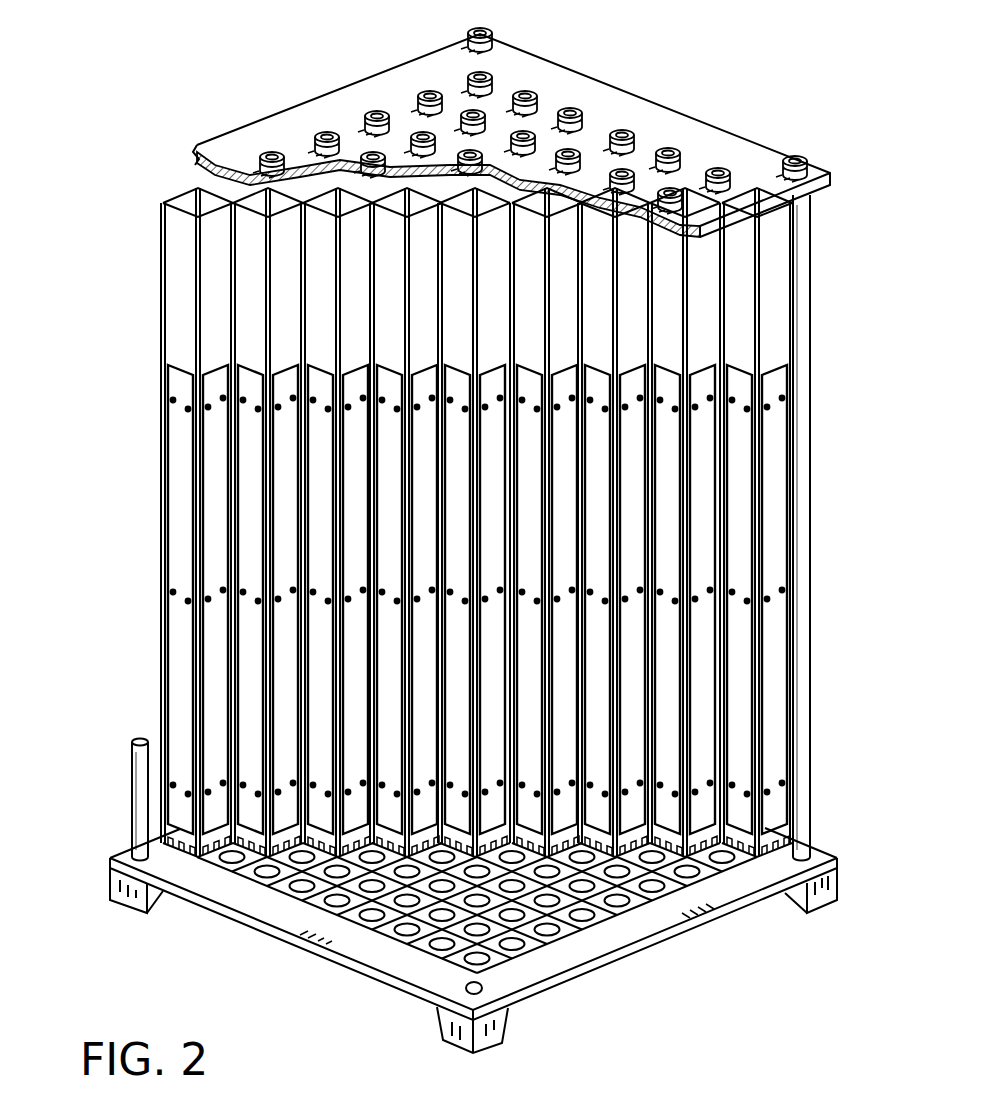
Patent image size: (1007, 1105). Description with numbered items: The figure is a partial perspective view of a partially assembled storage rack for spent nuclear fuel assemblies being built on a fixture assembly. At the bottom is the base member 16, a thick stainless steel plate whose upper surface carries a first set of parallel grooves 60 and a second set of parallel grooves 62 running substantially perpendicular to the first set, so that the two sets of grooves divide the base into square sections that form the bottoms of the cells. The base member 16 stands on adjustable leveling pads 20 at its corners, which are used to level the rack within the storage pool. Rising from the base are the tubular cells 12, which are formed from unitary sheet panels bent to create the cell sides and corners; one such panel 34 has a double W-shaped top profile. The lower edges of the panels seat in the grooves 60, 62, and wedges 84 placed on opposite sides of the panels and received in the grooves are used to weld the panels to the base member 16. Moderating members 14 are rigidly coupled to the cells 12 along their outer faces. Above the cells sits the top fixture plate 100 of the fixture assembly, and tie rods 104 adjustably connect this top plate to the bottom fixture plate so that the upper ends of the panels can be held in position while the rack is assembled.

The top fixture plate 100 is at (578, 85).
The panel 34 is at (253, 200).
The tubular cell 12 is at (451, 513).
The moderating member 14 is at (182, 735).
The tie rod 104 is at (808, 580).
The base member 16 is at (310, 962).
The adjustable leveling pad 20 is at (117, 887).
The wedge 84 is at (244, 858).
The first set of grooves 60 is at (545, 958).
The second set of grooves 62 is at (603, 917).